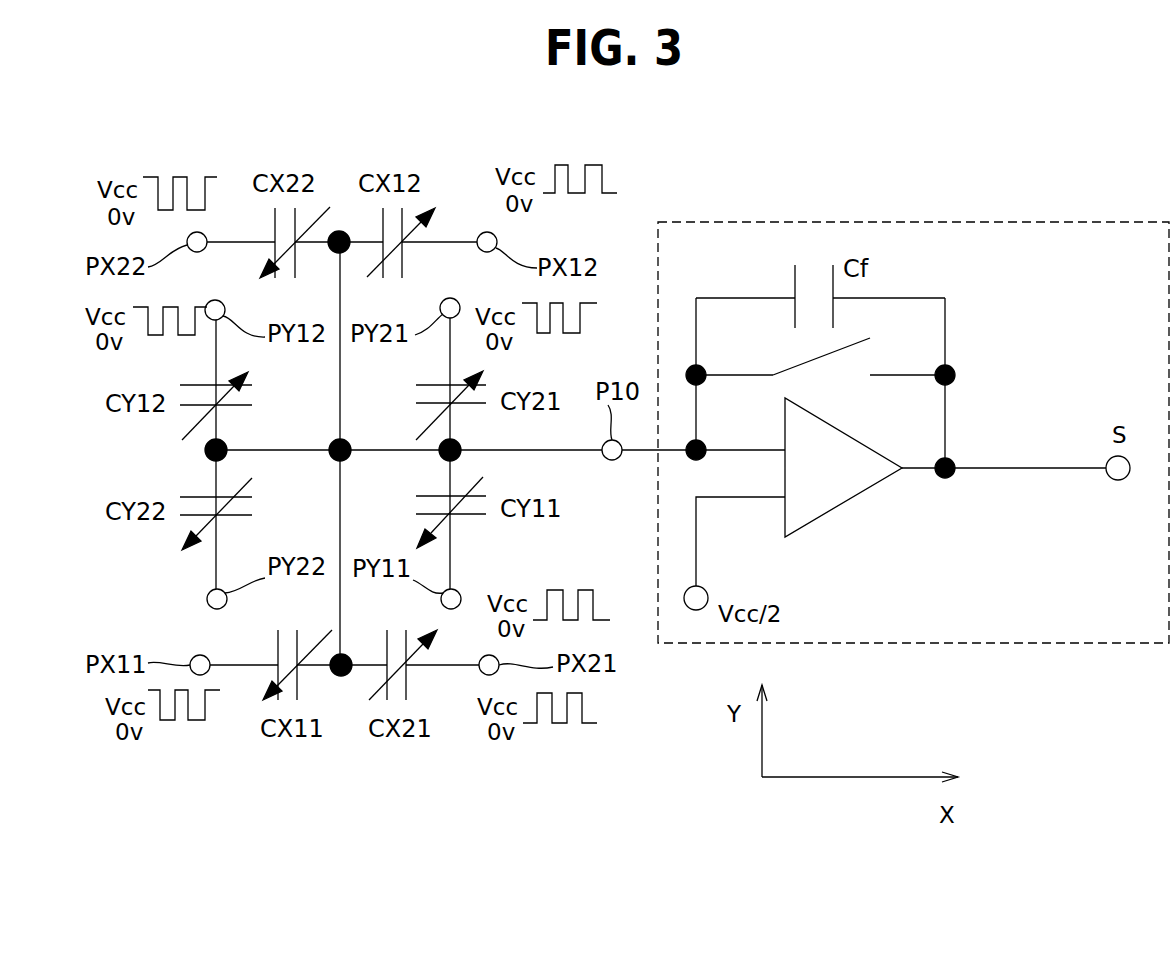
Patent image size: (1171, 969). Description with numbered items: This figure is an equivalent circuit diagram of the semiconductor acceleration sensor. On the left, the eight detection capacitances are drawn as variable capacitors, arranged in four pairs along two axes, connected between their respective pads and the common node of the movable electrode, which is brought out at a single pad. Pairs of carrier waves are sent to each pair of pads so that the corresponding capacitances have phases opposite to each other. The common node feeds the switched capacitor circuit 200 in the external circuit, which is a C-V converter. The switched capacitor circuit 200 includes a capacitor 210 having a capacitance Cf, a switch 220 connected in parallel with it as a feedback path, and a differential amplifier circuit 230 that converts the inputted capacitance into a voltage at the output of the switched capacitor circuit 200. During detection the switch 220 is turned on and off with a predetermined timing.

The switched capacitor circuit 200 is at (855, 222).
The capacitor 210 is at (793, 287).
The switch 220 is at (862, 337).
The differential amplifier circuit 230 is at (850, 497).